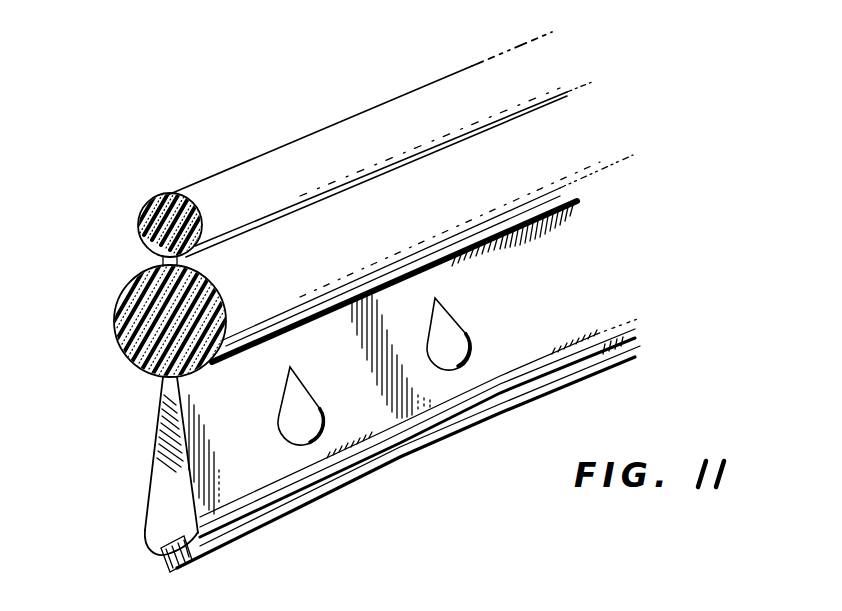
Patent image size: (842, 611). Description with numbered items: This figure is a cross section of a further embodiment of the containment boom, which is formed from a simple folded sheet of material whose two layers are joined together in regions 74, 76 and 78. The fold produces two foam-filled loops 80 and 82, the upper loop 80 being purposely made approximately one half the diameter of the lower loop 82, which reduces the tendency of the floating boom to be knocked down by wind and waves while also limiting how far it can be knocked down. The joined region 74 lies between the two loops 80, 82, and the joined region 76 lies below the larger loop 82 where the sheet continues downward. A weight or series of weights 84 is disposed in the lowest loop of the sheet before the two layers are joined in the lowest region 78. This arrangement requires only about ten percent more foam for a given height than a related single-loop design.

The joined region 74 is at (198, 247).
The joined region 76 is at (180, 379).
The joined region 78 is at (185, 553).
The loop 80 is at (140, 217).
The loop 82 is at (122, 298).
The weight 84 is at (178, 531).